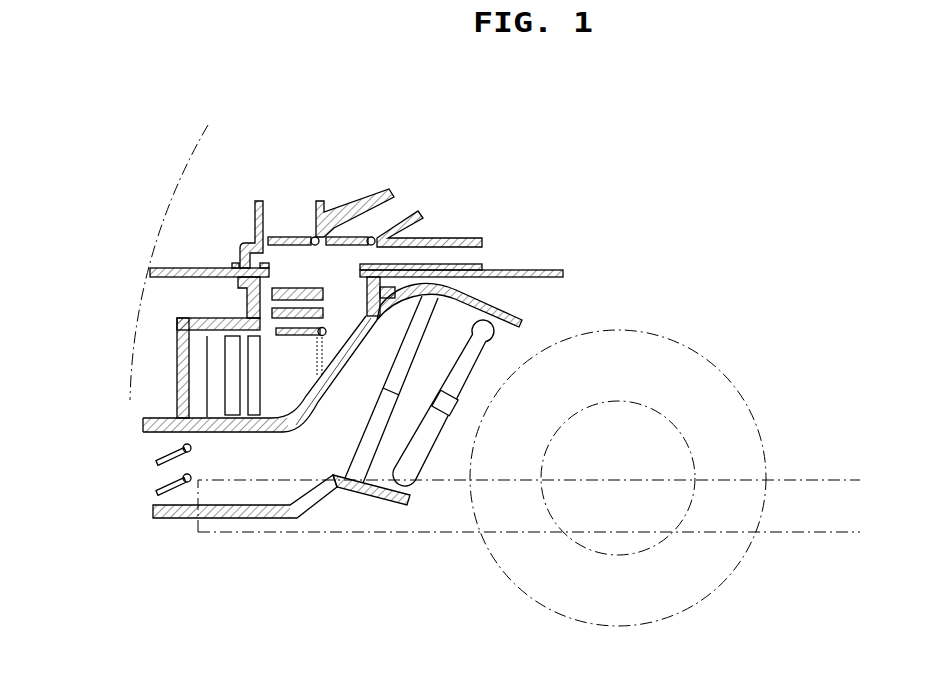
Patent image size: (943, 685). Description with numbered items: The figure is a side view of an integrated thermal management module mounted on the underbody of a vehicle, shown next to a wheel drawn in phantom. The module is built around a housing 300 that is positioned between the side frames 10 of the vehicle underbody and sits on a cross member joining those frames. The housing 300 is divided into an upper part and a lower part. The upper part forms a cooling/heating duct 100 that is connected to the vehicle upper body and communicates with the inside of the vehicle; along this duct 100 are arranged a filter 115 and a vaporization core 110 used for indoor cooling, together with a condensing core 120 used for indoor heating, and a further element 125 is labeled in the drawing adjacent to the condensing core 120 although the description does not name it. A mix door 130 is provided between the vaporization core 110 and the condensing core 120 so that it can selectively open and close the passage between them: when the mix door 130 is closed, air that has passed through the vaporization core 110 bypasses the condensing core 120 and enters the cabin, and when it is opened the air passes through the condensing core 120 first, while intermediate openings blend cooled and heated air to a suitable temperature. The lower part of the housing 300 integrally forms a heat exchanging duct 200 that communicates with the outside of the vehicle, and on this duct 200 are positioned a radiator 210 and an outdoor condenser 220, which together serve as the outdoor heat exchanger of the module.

The side frame 10 is at (814, 511).
The cooling/heating duct 100 is at (320, 273).
The vaporization core 110 is at (255, 357).
The filter 115 is at (233, 397).
The condensing core 120 is at (258, 306).
The plate 125 is at (293, 296).
The mix door 130 is at (274, 314).
The heat exchanging duct 200 is at (266, 447).
The radiator 210 is at (340, 476).
The outdoor condenser 220 is at (373, 468).
The housing 300 is at (180, 405).